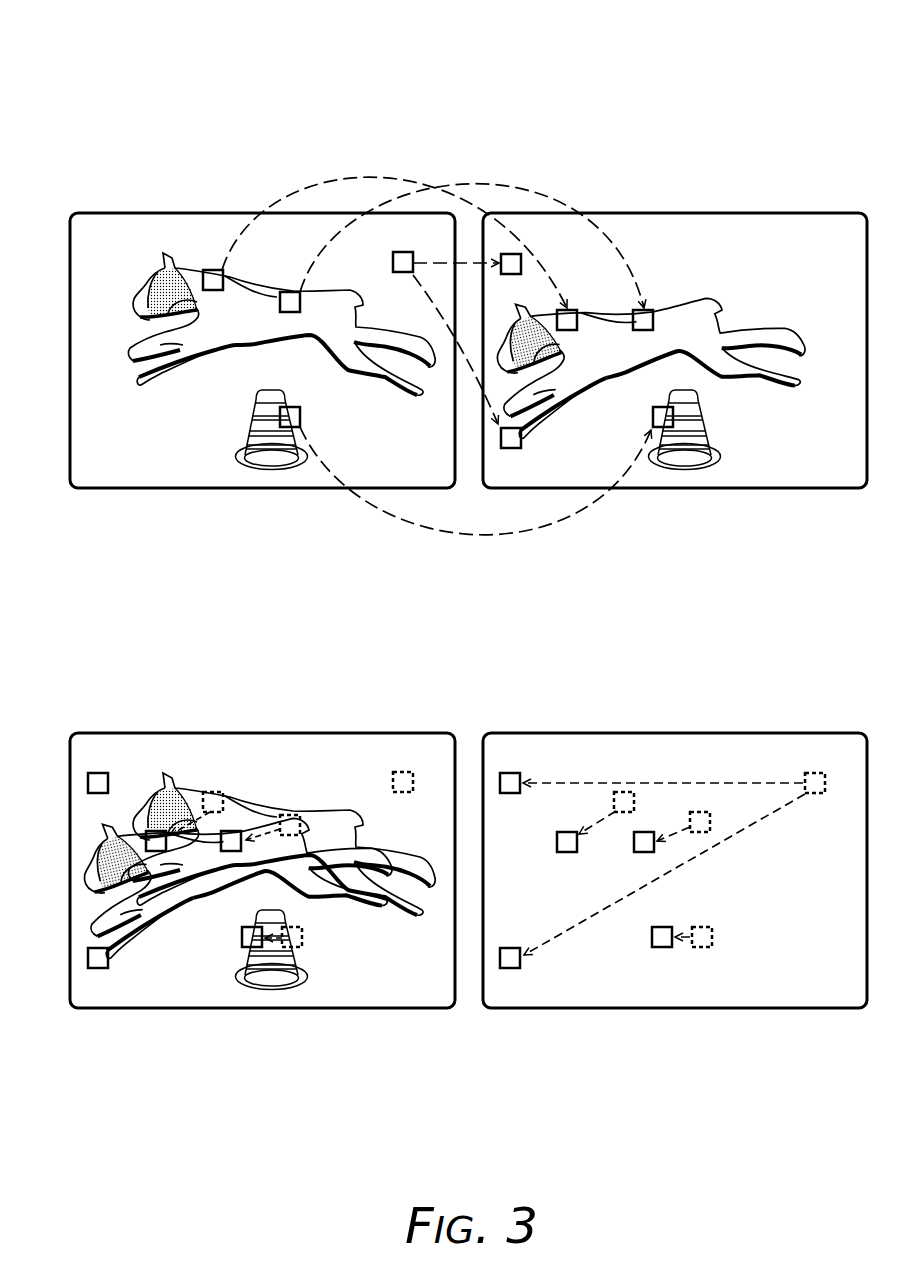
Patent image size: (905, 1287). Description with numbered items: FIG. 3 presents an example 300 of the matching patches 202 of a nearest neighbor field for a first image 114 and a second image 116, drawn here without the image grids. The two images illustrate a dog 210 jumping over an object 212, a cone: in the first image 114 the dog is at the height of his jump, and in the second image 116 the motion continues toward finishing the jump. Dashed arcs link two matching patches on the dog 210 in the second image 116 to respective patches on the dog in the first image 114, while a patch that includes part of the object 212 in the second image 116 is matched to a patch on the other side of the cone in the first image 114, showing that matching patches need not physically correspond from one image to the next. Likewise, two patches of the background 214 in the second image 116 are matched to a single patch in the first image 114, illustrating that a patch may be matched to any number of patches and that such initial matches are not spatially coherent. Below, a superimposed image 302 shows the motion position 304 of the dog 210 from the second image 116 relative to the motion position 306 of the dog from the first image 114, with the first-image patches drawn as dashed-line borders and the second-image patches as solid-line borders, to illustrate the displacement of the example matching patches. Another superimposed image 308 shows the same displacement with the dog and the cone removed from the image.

The example of matching patches 300 is at (672, 88).
The matching patches 202 is at (563, 181).
The first image 114 is at (210, 538).
The second image 116 is at (674, 388).
The dog 210 is at (709, 288).
The object 212 is at (750, 408).
The background 214 is at (830, 461).
The superimposed image 302 is at (262, 821).
The motion position of the dog in the second image 304 is at (117, 828).
The motion position of the dog in the first image 306 is at (188, 783).
The superimposed image 308 is at (703, 733).